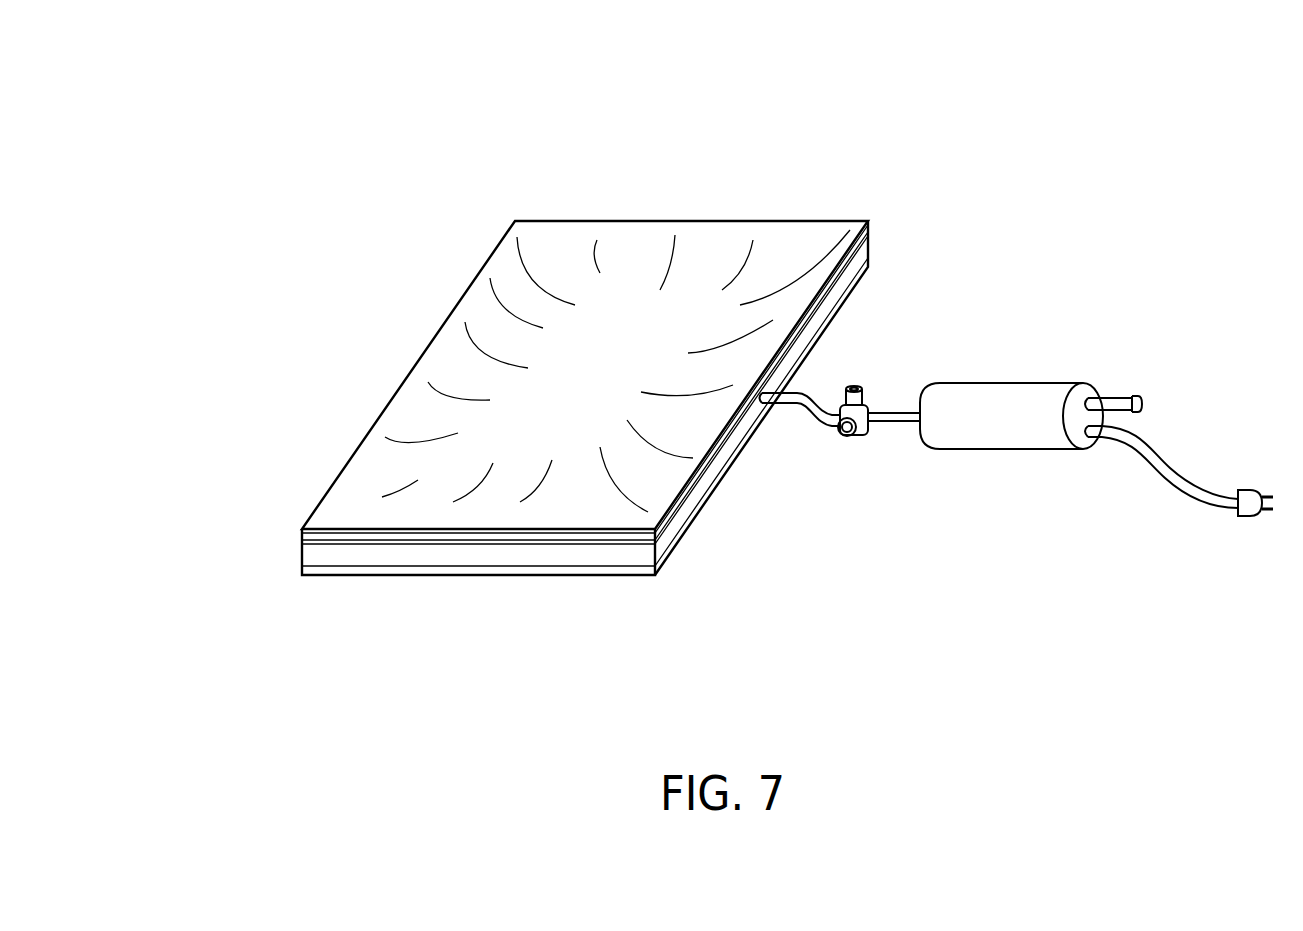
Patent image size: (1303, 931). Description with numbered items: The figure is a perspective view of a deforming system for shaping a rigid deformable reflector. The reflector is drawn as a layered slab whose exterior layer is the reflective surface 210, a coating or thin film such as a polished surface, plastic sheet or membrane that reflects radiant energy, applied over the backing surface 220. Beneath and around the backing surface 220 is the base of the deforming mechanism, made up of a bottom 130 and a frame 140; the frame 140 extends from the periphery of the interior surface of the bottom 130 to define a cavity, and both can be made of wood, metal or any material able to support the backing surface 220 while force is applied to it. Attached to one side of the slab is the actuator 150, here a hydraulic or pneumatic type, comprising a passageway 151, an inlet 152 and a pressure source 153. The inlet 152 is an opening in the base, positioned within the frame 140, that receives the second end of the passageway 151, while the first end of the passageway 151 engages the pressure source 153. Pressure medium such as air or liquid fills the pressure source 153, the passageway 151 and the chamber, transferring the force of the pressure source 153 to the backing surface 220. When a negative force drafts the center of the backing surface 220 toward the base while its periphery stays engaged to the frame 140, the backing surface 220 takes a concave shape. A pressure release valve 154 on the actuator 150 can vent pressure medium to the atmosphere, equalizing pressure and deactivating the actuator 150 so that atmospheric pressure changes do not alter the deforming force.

The bottom 130 is at (460, 571).
The frame 140 is at (395, 557).
The actuator 150 is at (884, 378).
The passageway 151 is at (822, 400).
The inlet 152 is at (802, 357).
The pressure source 153 is at (1002, 402).
The pressure release valve 154 is at (855, 436).
The reflective surface 210 is at (633, 238).
The backing surface 220 is at (327, 540).